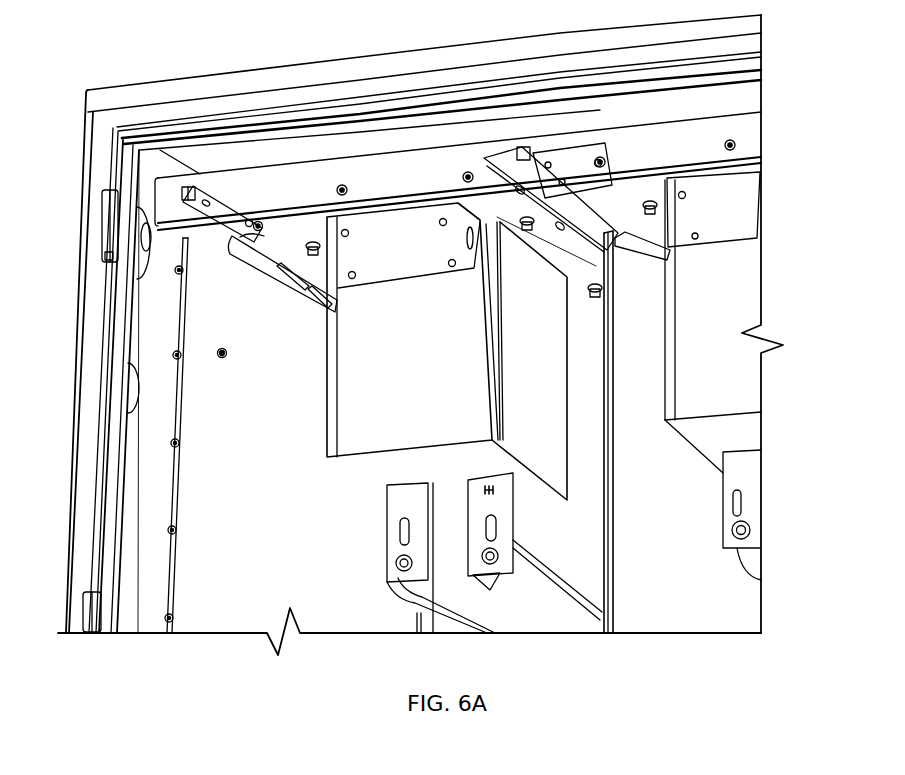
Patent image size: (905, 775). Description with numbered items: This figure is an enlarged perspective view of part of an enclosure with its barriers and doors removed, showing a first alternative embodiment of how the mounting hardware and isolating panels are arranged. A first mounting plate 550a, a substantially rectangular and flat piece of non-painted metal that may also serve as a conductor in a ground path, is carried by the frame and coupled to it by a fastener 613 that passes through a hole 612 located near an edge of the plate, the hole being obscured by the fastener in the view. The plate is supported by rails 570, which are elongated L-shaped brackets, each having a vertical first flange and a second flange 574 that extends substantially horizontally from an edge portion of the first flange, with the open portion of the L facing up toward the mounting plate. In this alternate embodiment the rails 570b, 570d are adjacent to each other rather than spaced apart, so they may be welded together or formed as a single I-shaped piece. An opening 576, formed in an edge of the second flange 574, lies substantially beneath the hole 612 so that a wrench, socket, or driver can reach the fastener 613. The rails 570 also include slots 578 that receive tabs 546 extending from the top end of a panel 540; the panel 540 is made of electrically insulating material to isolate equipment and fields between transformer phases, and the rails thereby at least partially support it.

The panel 540 is at (665, 469).
The tab 546 is at (625, 247).
The first mounting plate 550a is at (307, 236).
The rail 570 is at (220, 225).
The rail 570b is at (557, 174).
The rail 570d is at (520, 188).
The second flange 574 is at (268, 258).
The opening 576 is at (256, 240).
The slot 578 is at (632, 250).
The hole 612 is at (251, 220).
The fastener 613 is at (260, 222).